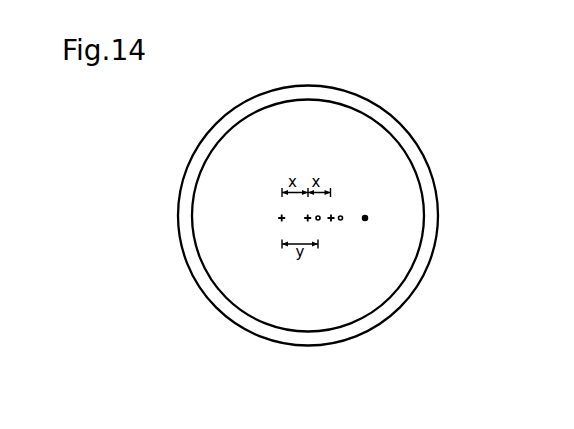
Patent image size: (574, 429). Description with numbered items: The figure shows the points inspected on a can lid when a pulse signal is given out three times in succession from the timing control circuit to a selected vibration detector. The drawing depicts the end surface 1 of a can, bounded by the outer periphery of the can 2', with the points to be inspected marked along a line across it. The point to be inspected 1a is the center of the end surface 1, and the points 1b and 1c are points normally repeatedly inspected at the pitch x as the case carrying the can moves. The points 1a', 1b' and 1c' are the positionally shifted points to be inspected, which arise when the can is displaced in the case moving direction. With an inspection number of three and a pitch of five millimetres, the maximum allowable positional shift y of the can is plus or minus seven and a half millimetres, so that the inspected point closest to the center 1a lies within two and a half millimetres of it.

The end surface 1 is at (248, 133).
The outer periphery of the can 2' is at (308, 211).
The point to be inspected 1a is at (221, 198).
The positionally shifted point to be inspected 1a' is at (416, 196).
The point to be inspected 1b is at (218, 268).
The positionally shifted point to be inspected 1b' is at (344, 305).
The point to be inspected 1c is at (387, 284).
The positionally shifted point to be inspected 1c' is at (427, 238).